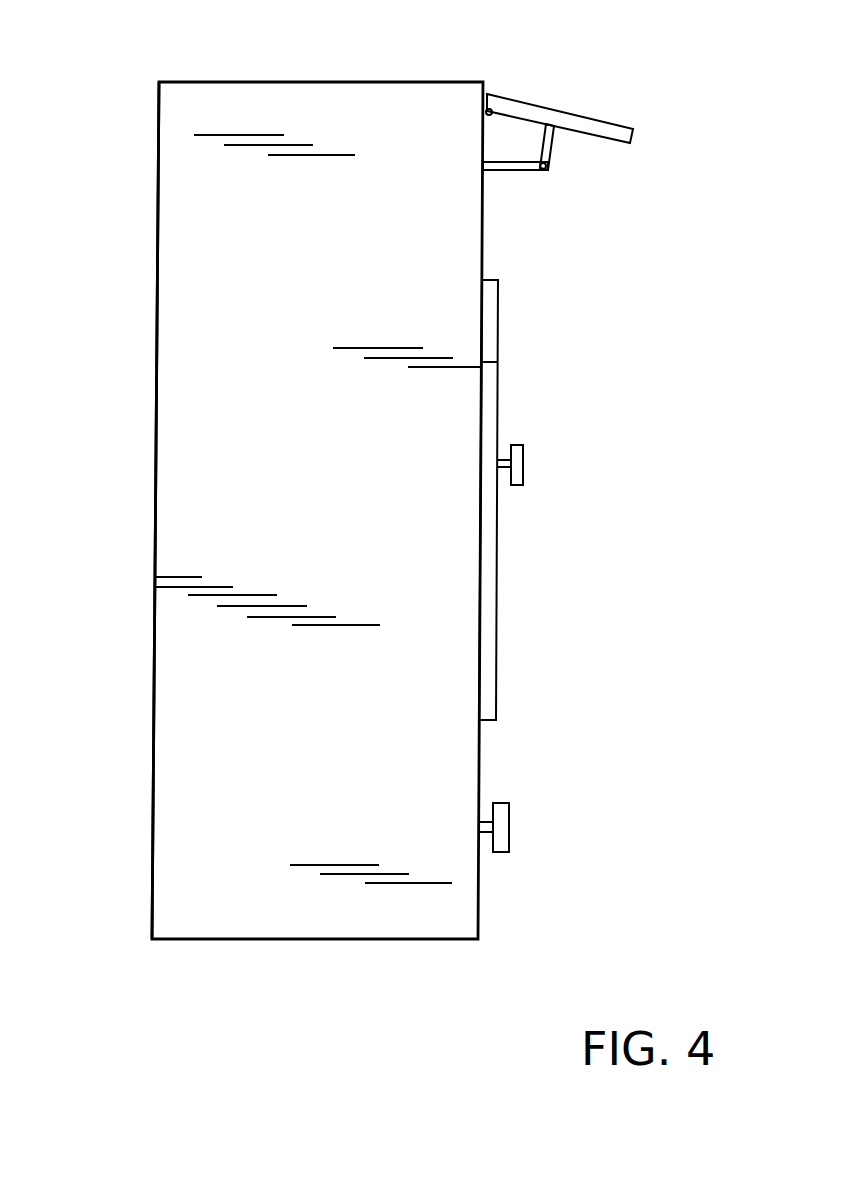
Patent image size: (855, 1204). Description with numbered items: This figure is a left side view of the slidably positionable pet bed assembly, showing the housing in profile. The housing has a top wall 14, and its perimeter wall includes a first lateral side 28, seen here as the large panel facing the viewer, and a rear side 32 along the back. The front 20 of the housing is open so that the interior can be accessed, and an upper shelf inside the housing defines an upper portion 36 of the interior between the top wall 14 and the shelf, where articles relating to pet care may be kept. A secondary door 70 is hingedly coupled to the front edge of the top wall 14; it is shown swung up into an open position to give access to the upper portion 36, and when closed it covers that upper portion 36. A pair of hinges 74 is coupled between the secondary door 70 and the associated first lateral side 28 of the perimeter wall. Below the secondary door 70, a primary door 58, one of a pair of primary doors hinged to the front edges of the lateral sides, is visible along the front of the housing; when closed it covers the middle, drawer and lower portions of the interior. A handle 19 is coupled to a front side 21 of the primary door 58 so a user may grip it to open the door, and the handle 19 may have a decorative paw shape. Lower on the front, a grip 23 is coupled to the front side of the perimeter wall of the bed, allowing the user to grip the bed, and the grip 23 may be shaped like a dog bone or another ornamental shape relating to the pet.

The top wall 14 is at (313, 82).
The first lateral side 28 is at (184, 476).
The rear side 32 is at (157, 371).
The upper portion 36 is at (571, 153).
The secondary door 70 is at (590, 122).
The hinges 74 is at (508, 172).
The primary door 58 is at (494, 589).
The front 20 is at (582, 399).
The front side 21 is at (498, 362).
The handle 19 is at (523, 463).
The grip 23 is at (508, 833).